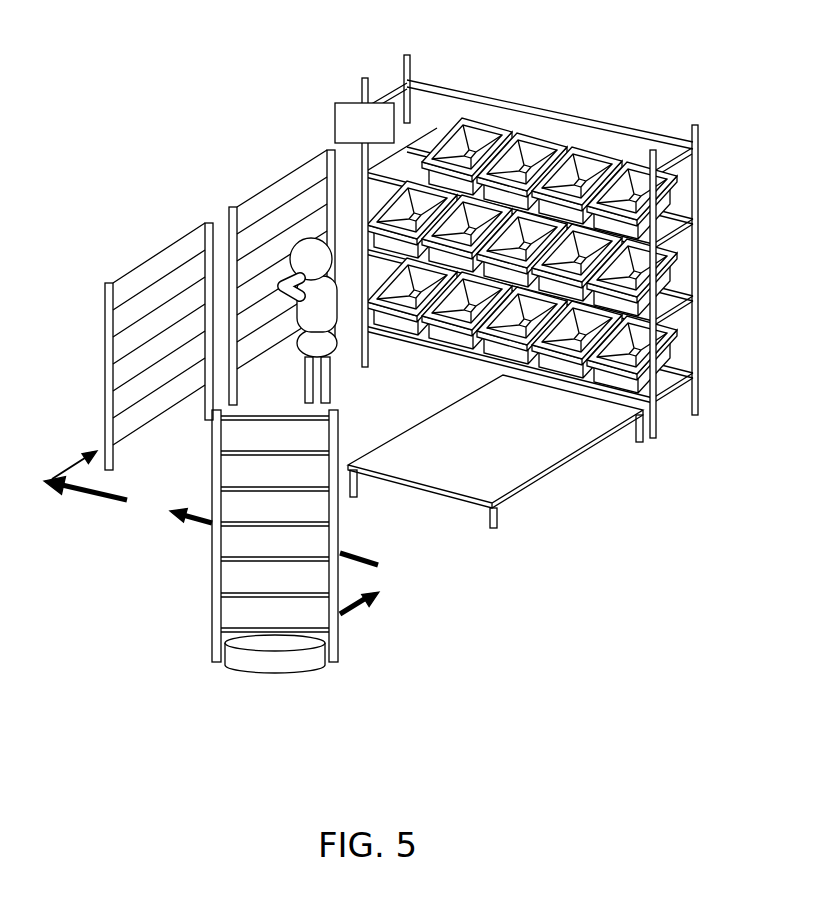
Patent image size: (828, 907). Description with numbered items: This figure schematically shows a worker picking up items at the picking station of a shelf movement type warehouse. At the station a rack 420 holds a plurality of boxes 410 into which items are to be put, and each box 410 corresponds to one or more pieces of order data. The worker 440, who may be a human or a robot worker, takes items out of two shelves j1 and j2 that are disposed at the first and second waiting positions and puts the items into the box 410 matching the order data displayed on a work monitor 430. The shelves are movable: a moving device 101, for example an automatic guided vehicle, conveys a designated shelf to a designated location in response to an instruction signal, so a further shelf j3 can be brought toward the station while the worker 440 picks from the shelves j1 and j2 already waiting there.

The rack 420 is at (464, 87).
The box 410 is at (530, 142).
The work monitor 430 is at (351, 101).
The worker 440 is at (340, 385).
The moving device 101 is at (283, 663).
The shelf j1 is at (280, 180).
The shelf j2 is at (157, 255).
The shelf j3 is at (212, 578).